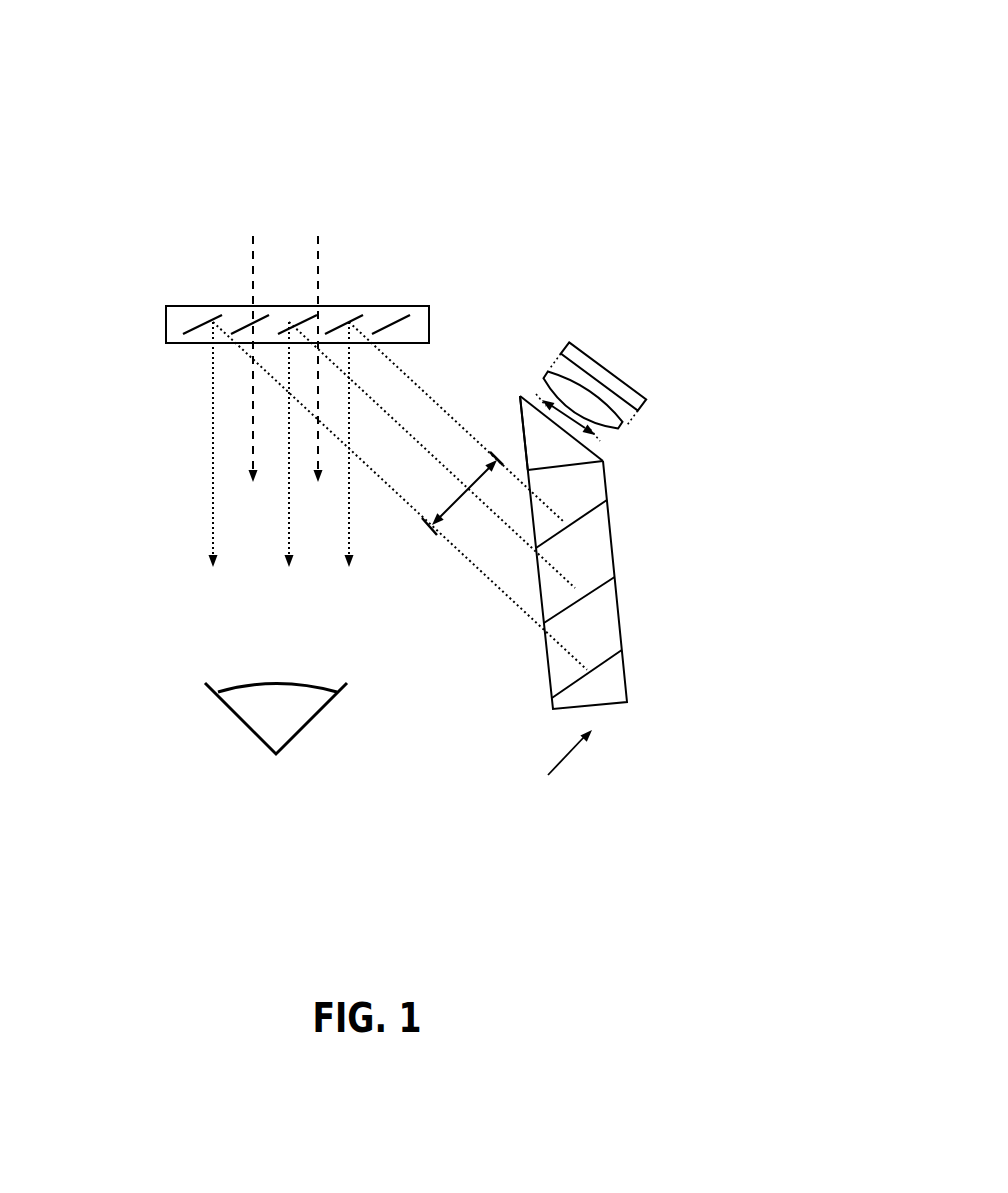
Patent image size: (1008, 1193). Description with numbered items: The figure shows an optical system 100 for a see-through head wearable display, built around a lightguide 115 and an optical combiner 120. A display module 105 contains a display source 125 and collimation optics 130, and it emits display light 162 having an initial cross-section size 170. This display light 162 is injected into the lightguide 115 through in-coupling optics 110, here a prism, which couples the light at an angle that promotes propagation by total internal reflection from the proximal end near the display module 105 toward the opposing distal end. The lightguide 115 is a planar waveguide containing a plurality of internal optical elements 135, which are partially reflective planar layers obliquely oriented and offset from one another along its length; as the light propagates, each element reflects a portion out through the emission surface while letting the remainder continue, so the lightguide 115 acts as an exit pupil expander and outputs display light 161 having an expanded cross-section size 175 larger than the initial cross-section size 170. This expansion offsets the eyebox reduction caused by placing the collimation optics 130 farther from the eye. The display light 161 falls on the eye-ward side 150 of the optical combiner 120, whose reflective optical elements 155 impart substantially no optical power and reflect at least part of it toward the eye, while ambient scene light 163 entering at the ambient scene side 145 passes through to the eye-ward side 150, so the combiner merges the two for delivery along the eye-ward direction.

The optical system 100 is at (773, 107).
The display module 105 is at (688, 378).
The in-coupling optics 110 is at (566, 455).
The lightguide 115 is at (627, 690).
The optical combiner 120 is at (420, 307).
The display source 125 is at (587, 352).
The collimation optics 130 is at (627, 428).
The internal optical elements 135 is at (607, 502).
The ambient scene side 145 is at (178, 265).
The eye-ward side 150 is at (188, 372).
The reflective optical elements 155 is at (183, 322).
The display light 161 is at (499, 593).
The display light 162 is at (542, 392).
The ambient scene light 163 is at (252, 240).
The initial cross-section size 170 is at (600, 447).
The expanded cross-section size 175 is at (430, 537).